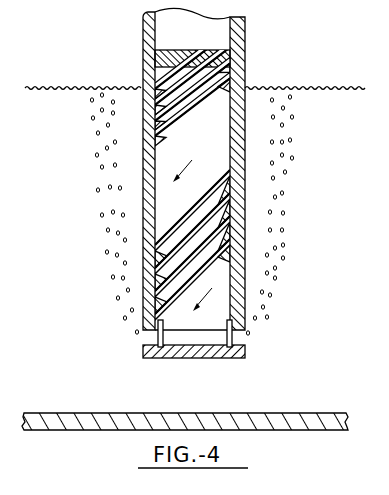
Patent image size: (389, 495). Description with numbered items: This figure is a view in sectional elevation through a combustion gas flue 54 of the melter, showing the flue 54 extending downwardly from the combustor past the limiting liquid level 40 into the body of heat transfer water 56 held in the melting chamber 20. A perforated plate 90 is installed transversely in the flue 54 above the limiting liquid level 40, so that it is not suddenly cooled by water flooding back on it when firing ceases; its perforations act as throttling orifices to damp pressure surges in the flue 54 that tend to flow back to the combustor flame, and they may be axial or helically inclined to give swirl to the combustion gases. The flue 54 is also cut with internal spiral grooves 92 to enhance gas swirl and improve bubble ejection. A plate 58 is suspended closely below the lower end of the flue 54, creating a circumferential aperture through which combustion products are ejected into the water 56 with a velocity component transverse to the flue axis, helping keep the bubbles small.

The melting chamber 20 is at (292, 413).
The limiting liquid level 40 is at (87, 88).
The flue 54 is at (244, 57).
The heat transfer water 56 is at (90, 226).
The plate 58 is at (213, 359).
The perforated plate 90 is at (193, 50).
The internal spiral grooves 92 is at (230, 170).